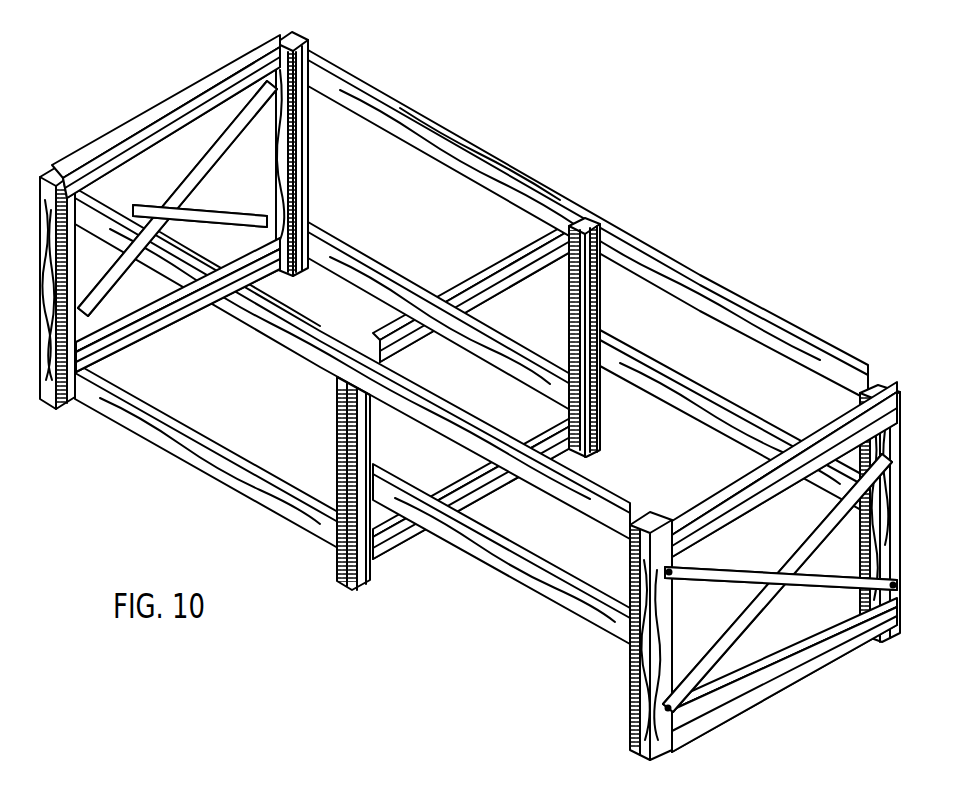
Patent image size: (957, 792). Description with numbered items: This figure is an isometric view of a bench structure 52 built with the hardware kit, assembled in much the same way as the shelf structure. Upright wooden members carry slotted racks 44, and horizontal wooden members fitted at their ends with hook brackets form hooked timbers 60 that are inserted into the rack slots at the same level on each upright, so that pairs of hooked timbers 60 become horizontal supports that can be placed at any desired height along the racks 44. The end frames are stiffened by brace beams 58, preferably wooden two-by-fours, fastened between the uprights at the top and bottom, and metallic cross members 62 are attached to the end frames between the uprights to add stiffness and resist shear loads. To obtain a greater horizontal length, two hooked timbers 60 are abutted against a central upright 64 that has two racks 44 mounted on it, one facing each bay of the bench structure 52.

The bench structure 52 is at (524, 108).
The racks 44 is at (337, 453).
The brace beams 58 is at (745, 720).
The hooked timbers 60 is at (640, 343).
The metallic cross members 62 is at (189, 180).
The upright 2×4 64 is at (568, 347).